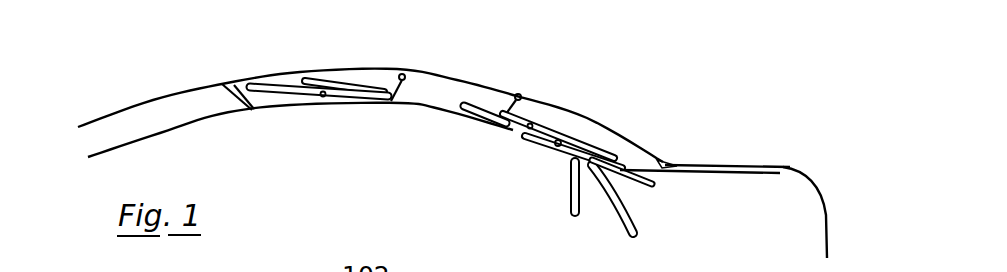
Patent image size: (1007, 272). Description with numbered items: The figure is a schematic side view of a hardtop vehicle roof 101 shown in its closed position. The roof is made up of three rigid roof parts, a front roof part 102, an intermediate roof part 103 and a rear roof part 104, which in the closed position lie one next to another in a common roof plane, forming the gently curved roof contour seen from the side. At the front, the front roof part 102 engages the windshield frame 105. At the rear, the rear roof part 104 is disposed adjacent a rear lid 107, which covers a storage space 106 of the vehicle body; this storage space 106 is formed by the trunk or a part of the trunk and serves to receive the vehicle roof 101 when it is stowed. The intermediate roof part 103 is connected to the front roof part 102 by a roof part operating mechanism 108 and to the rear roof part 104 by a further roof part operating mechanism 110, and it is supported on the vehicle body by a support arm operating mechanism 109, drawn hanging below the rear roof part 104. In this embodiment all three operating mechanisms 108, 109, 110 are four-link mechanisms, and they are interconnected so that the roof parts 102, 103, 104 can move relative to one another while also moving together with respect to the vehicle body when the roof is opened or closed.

The hardtop vehicle roof 101 is at (310, 55).
The front roof part 102 is at (350, 78).
The intermediate roof part 103 is at (459, 90).
The rear roof part 104 is at (578, 115).
The windshield frame 105 is at (210, 91).
The storage space 106 is at (718, 180).
The rear lid 107 is at (790, 168).
The roof part operating mechanism 108 is at (287, 108).
The support arm operating mechanism 109 is at (553, 202).
The roof part operating mechanism 110 is at (657, 200).